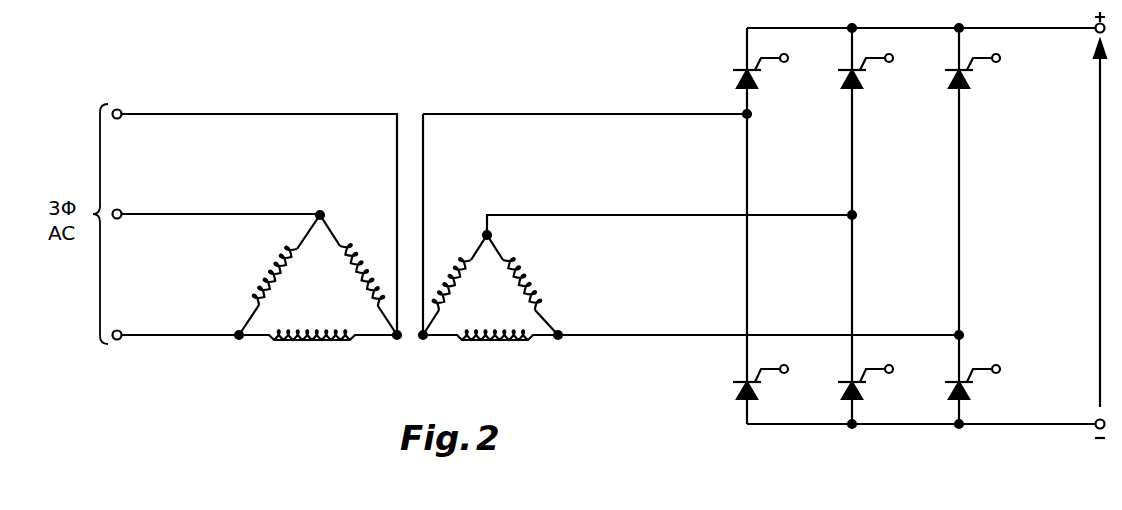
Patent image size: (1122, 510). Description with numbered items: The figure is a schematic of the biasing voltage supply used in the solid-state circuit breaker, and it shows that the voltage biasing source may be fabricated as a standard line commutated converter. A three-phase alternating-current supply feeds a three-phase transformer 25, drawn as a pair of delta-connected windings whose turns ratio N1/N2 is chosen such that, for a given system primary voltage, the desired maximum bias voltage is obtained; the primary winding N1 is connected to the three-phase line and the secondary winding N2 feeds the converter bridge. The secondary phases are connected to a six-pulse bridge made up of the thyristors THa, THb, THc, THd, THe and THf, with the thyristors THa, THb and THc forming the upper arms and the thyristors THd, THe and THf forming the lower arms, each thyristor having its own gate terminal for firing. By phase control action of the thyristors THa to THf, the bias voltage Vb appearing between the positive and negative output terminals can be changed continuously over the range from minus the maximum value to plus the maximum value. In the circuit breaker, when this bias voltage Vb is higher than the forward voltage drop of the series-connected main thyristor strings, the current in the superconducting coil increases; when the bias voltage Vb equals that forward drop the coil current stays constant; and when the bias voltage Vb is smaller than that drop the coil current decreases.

The three-phase transformer 25 is at (398, 274).
The primary winding turns N1 is at (318, 275).
The secondary winding turns N2 is at (490, 285).
The thyristor THa is at (740, 66).
The thyristor THb is at (846, 66).
The thyristor THc is at (953, 66).
The thyristor THd is at (738, 377).
The thyristor THe is at (846, 377).
The thyristor THf is at (953, 377).
The bias voltage Vb is at (1083, 223).